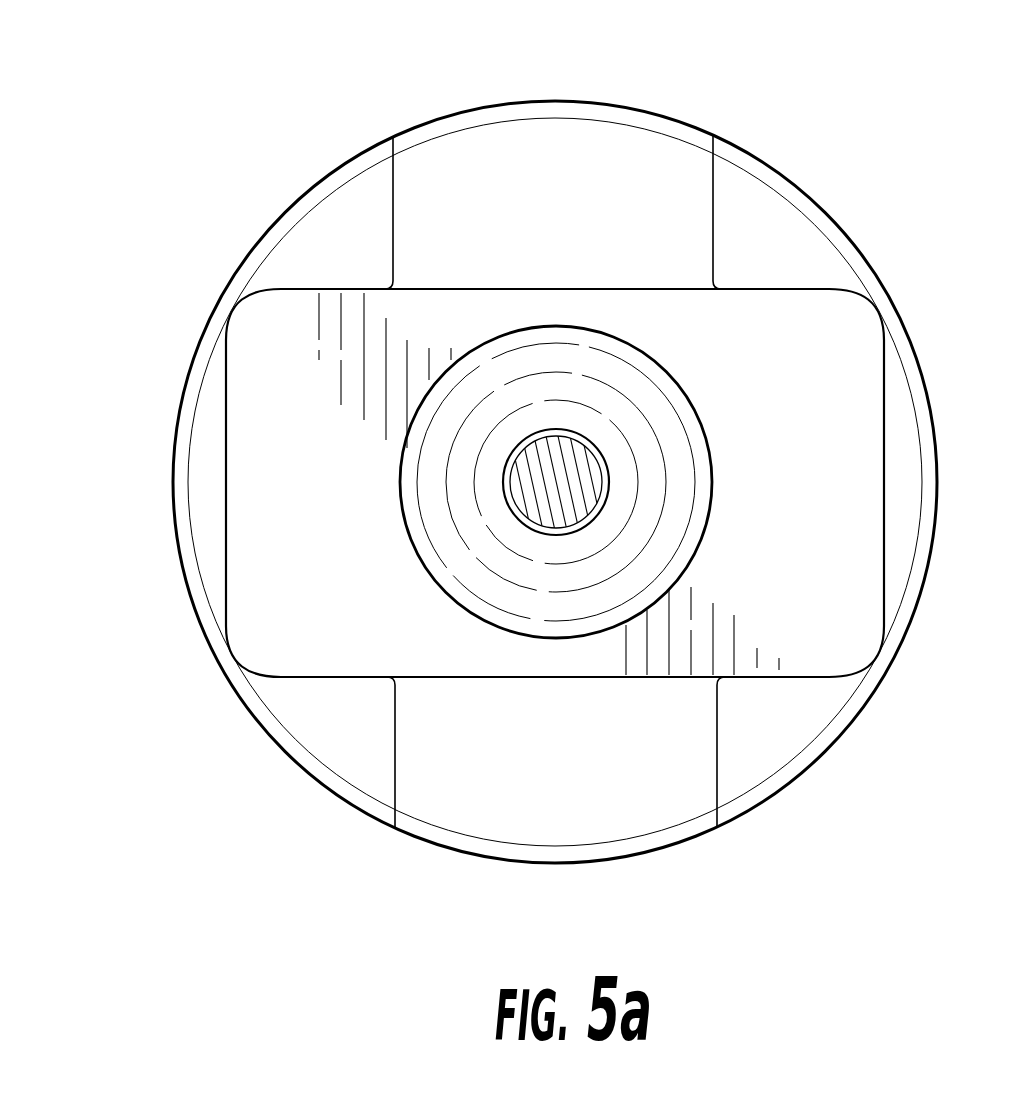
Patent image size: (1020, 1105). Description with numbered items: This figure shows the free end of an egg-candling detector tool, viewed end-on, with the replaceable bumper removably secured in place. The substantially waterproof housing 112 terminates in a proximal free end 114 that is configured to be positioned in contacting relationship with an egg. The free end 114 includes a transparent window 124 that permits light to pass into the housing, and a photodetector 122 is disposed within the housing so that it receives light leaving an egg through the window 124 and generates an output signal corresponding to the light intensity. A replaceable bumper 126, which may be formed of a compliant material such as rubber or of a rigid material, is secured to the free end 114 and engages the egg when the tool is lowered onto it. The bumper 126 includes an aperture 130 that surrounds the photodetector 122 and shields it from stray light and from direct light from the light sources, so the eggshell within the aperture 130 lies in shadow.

The housing 112 is at (366, 132).
The free end 114 is at (335, 212).
The replaceable bumper 126 is at (753, 327).
The transparent window 124 is at (545, 473).
The aperture 130 is at (588, 592).
The photodetector 122 is at (553, 530).